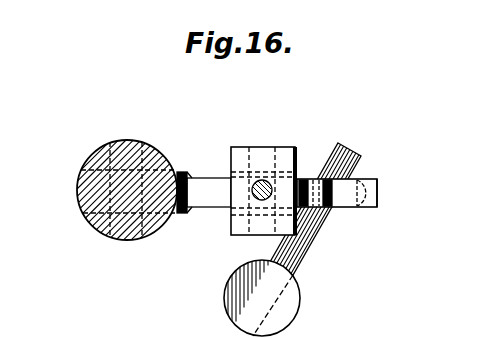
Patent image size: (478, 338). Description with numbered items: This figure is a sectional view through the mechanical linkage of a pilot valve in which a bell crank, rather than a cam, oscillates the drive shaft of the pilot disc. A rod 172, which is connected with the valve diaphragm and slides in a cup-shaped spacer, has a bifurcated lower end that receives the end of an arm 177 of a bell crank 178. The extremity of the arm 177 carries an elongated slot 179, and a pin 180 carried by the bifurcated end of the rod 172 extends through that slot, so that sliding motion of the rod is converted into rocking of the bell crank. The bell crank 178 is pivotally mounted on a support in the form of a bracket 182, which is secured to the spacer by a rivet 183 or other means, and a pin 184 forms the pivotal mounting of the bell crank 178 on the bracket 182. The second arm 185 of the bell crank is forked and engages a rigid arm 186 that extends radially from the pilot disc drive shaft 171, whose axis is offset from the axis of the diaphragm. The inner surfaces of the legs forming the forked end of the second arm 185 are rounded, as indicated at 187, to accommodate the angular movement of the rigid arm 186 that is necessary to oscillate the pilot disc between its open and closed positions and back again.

The pilot disc drive shaft 171 is at (300, 306).
The rod 172 is at (80, 205).
The arm 177 is at (200, 180).
The bell crank 178 is at (305, 183).
The elongated slot 179 is at (158, 242).
The pin 180 is at (112, 242).
The bracket 182 is at (289, 147).
The rivet 183 is at (253, 199).
The pin 184 is at (252, 237).
The second arm 185 is at (378, 191).
The rigid arm 186 is at (313, 240).
The rounded inner surfaces 187 is at (357, 183).